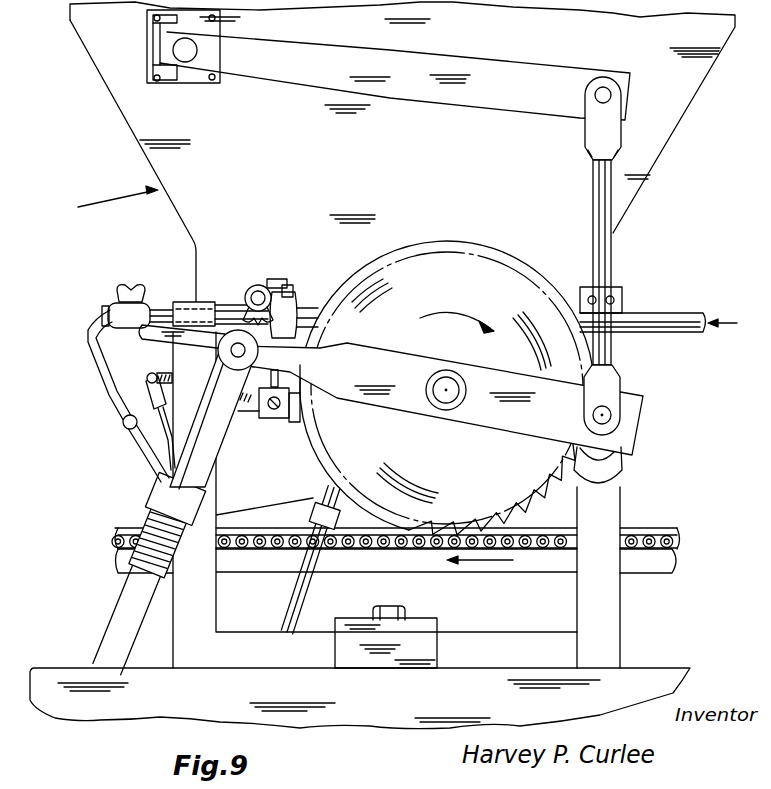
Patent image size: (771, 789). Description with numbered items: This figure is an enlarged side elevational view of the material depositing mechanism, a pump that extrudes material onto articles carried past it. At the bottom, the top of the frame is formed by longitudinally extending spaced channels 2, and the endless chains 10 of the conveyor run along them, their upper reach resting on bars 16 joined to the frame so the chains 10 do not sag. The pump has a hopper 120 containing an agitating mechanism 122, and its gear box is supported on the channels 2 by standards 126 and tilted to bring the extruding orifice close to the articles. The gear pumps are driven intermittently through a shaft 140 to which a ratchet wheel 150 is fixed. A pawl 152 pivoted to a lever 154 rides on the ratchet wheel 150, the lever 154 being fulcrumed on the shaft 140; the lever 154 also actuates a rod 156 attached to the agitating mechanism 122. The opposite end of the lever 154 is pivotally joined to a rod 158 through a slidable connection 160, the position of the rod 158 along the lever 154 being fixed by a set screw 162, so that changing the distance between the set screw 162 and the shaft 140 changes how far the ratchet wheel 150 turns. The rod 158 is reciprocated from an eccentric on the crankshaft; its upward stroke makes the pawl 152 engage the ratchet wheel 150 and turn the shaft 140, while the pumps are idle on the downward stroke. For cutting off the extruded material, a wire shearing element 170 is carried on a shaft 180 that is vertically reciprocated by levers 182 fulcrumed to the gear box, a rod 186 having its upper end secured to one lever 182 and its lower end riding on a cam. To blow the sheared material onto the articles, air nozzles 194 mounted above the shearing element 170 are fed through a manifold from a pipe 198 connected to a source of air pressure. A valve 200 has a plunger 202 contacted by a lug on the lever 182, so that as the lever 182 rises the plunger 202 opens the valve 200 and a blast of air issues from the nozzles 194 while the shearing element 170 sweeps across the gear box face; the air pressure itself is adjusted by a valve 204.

The channels 2 is at (140, 707).
The endless chains 10 is at (650, 530).
The bars 16 is at (655, 564).
The hopper 120 is at (100, 50).
The agitating mechanism 122 is at (337, 73).
The standards 126 is at (602, 612).
The shaft 140 is at (443, 397).
The ratchet wheel 150 is at (465, 263).
The pawl 152 is at (593, 458).
The lever 154 is at (518, 422).
The rod 156 is at (607, 245).
The rod 158 is at (125, 607).
The slidable connection 160 is at (233, 323).
The set screw 162 is at (260, 297).
The shearing element 170 is at (147, 398).
The shaft 180 is at (145, 378).
The levers 182 is at (249, 411).
The rod 186 is at (283, 593).
The nozzles 194 is at (133, 435).
The pipe 198 is at (657, 318).
The valve 200 is at (287, 302).
The plunger 202 is at (275, 409).
The valve 204 is at (120, 300).